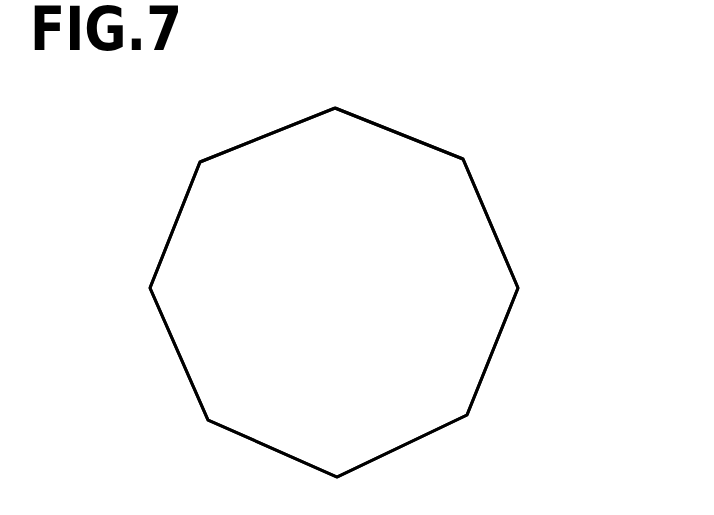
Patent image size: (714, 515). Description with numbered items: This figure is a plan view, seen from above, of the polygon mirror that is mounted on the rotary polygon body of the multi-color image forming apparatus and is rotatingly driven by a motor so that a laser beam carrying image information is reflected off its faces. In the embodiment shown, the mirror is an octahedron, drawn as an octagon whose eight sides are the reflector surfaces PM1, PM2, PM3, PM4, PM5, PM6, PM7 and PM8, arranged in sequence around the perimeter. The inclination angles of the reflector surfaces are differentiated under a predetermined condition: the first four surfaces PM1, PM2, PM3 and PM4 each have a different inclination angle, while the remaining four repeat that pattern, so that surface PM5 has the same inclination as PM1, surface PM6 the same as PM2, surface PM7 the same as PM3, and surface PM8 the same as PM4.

The reflector surface PM1 is at (411, 123).
The reflector surface PM2 is at (529, 223).
The reflector surface PM3 is at (529, 351).
The reflector surface PM4 is at (412, 457).
The reflector surface PM5 is at (272, 459).
The reflector surface PM6 is at (146, 354).
The reflector surface PM7 is at (137, 225).
The reflector surface PM8 is at (265, 129).